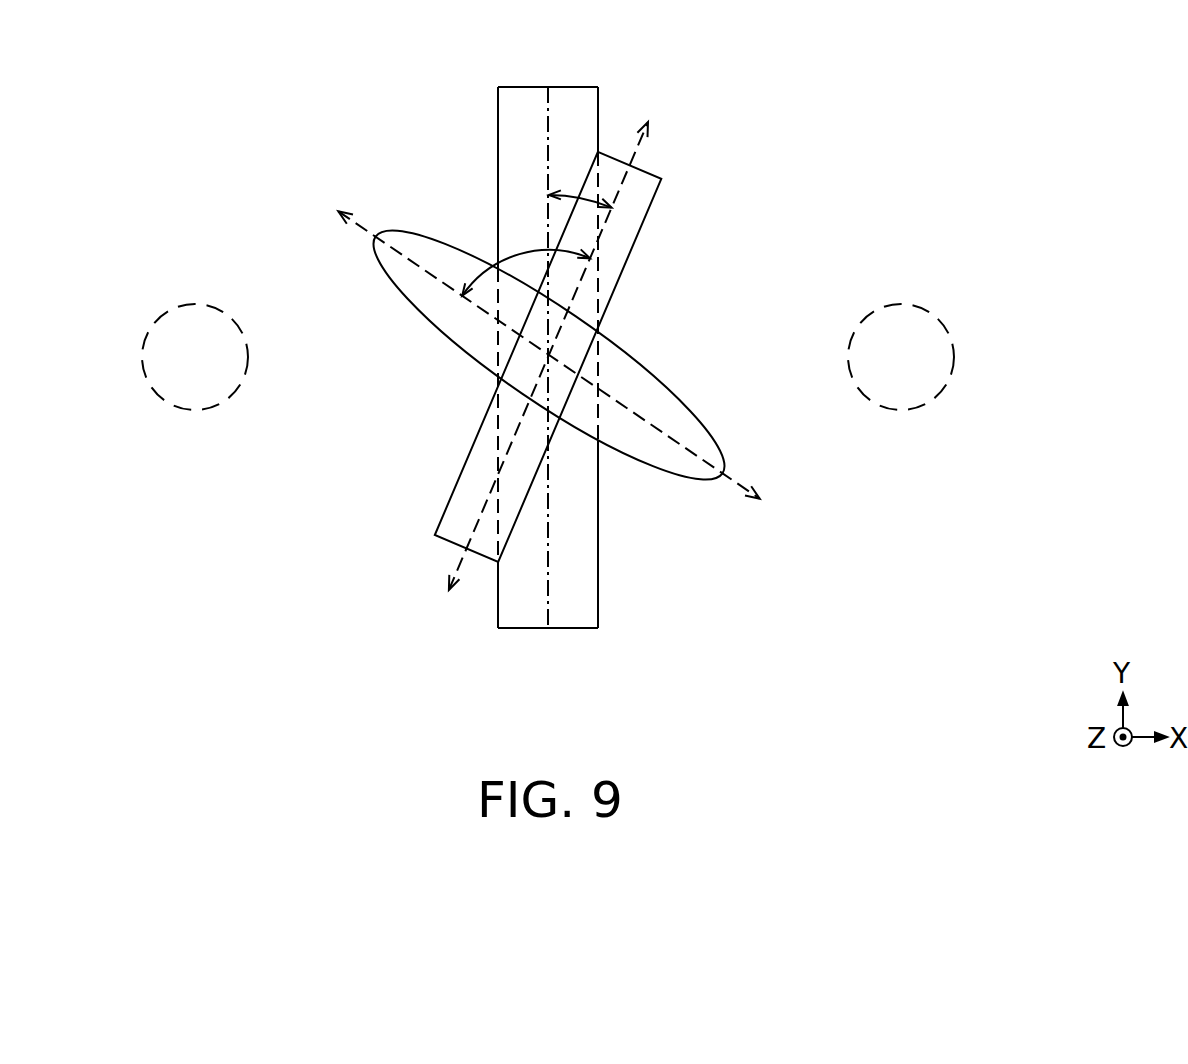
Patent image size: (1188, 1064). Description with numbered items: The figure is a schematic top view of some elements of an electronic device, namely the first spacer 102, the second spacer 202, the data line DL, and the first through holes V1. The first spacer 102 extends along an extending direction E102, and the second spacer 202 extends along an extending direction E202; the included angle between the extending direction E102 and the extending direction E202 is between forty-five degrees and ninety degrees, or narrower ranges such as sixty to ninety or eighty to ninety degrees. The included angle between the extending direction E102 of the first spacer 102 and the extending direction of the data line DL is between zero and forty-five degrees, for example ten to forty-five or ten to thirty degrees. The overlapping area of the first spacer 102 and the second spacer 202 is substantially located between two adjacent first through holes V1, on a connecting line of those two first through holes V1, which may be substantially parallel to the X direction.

The data line DL is at (571, 105).
The first spacer 102 is at (633, 213).
The second spacer 202 is at (664, 466).
The extending direction of the first spacer E102 is at (567, 337).
The extending direction of the second spacer E202 is at (516, 336).
The first through holes V1 is at (192, 303).